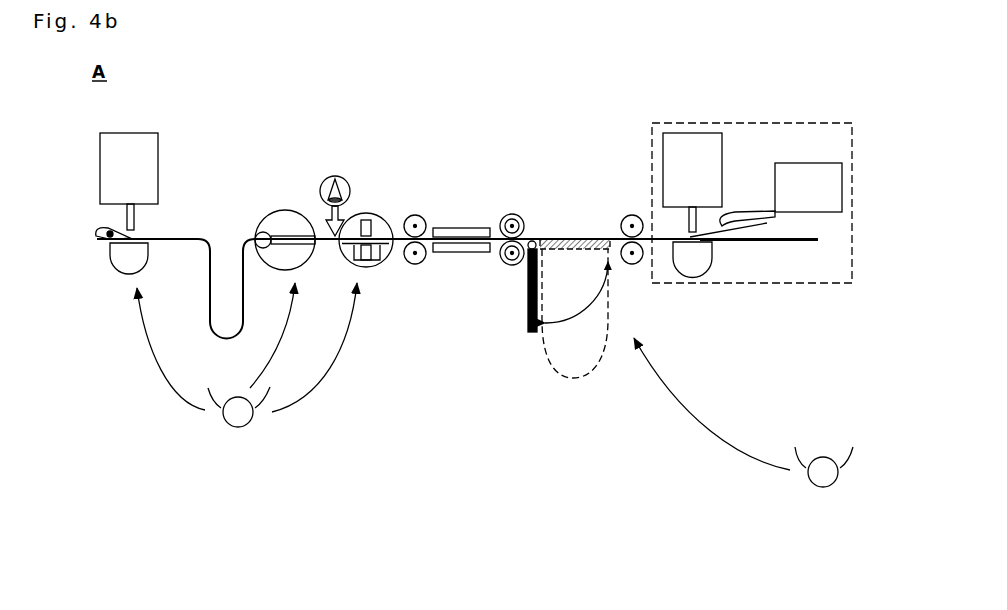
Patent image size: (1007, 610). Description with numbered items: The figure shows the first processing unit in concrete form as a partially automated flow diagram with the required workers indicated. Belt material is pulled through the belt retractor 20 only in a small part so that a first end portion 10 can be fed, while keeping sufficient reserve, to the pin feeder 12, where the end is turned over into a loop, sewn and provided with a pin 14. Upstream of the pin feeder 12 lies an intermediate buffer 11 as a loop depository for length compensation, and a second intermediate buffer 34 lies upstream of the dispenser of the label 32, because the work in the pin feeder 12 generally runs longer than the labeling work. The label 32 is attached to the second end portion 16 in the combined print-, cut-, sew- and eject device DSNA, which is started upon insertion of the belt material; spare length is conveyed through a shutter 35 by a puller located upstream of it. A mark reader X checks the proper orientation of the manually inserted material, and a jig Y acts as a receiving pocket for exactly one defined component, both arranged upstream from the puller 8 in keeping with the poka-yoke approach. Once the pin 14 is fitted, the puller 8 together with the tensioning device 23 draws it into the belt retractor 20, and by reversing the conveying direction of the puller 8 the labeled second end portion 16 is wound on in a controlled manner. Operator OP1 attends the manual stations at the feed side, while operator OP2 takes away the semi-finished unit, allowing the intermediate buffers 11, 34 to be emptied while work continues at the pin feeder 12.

The puller 8 is at (422, 215).
The first end portion 10 is at (141, 214).
The intermediate buffer 11 is at (220, 236).
The pin feeder 12 is at (94, 246).
The pin 14 is at (100, 234).
The second end portion 16 is at (809, 246).
The belt retractor 20 is at (282, 210).
The tensioning device 23 is at (467, 252).
The label 32 is at (739, 228).
The intermediate buffer 34 is at (550, 374).
The shutter 35 is at (526, 305).
The mark reader X is at (333, 175).
The jig Y is at (377, 216).
The operator OP1 is at (230, 428).
The operator OP2 is at (817, 488).
The combined print-/cut-/sew- and eject device DSNA is at (752, 185).